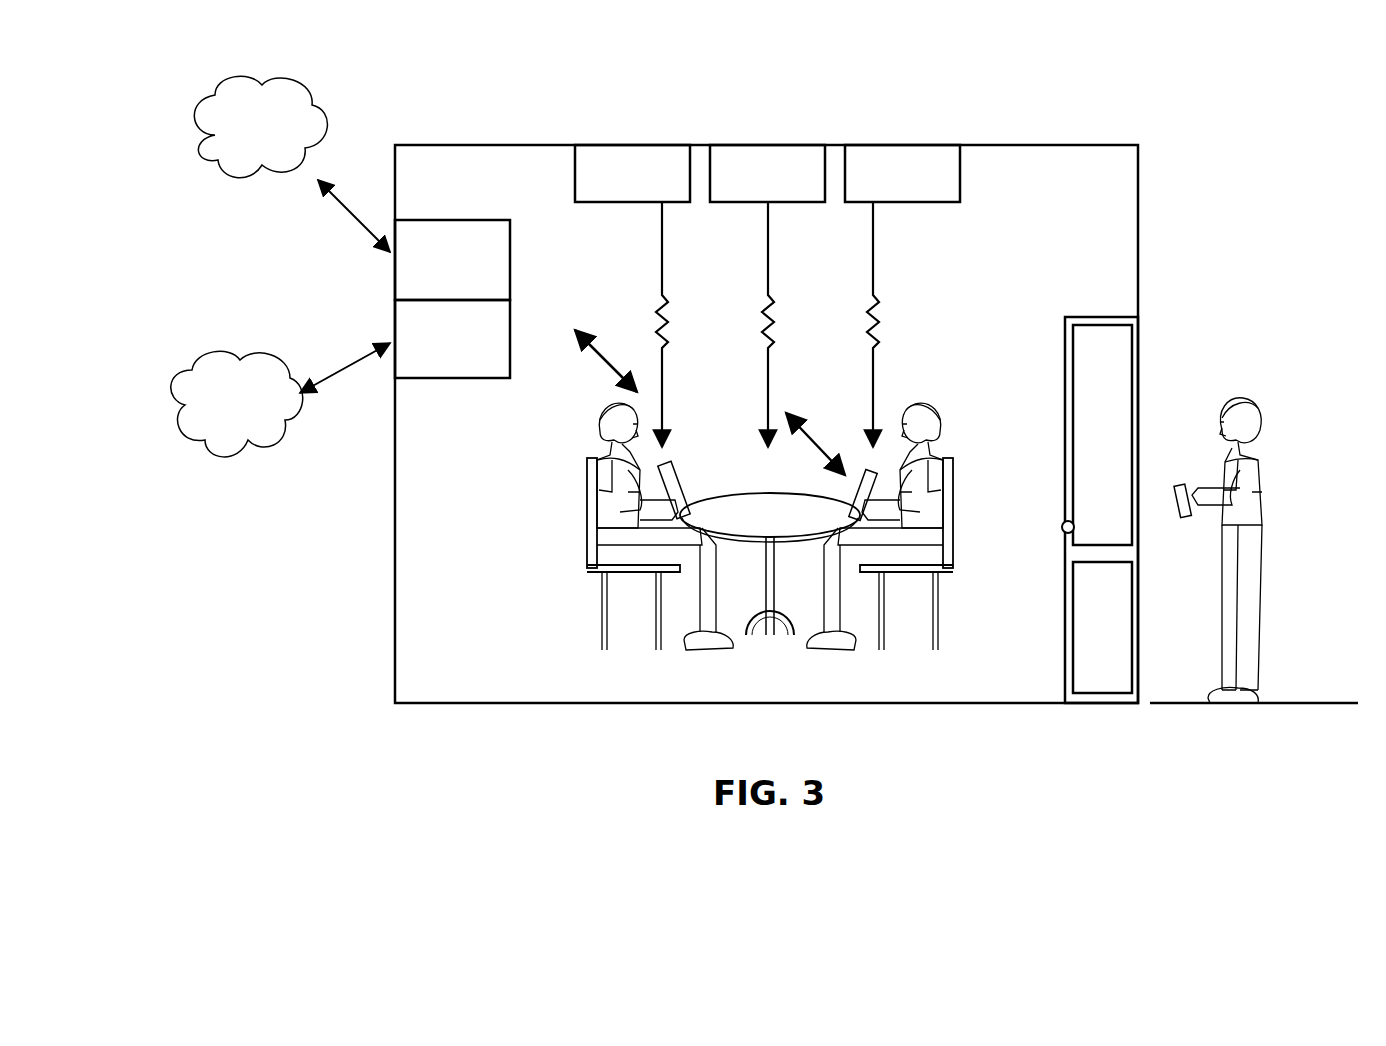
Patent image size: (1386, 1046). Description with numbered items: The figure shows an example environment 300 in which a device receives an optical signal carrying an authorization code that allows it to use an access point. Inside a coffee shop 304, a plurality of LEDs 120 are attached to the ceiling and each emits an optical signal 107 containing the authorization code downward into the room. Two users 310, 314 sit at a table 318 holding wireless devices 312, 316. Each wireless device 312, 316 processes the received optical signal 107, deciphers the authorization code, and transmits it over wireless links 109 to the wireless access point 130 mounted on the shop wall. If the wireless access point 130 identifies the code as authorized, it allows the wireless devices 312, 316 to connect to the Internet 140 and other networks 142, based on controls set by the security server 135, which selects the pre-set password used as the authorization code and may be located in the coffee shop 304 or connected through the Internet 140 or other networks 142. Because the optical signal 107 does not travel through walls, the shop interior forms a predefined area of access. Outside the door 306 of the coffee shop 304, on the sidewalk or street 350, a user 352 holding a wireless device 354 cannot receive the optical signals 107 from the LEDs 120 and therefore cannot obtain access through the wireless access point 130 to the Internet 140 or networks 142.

The system environment 300 is at (432, 48).
The coffee shop 304 is at (1098, 145).
The Internet 140 is at (228, 80).
The networks 142 is at (205, 352).
The wireless access point 130 is at (452, 220).
The security server 135 is at (455, 378).
The LEDs 120 is at (590, 145).
The optical signal 107 is at (872, 258).
The wireless links 109 is at (606, 347).
The user 310 is at (585, 420).
The wireless device 312 is at (683, 460).
The user 314 is at (938, 398).
The wireless device 316 is at (860, 478).
The table 318 is at (778, 508).
The door 306 is at (1120, 317).
The sidewalk or street 350 is at (1290, 703).
The user 352 is at (1260, 390).
The wireless device 354 is at (1182, 482).